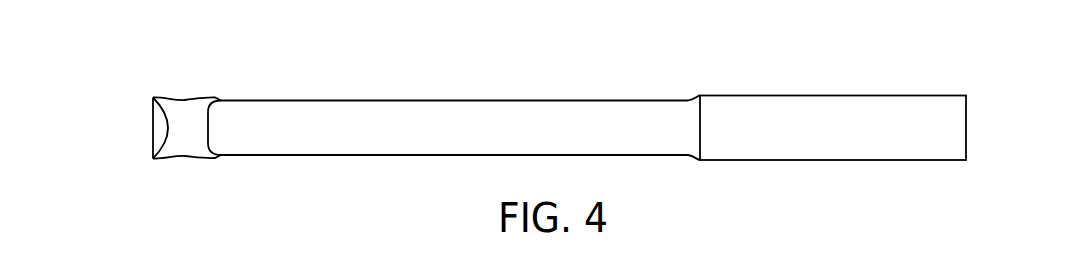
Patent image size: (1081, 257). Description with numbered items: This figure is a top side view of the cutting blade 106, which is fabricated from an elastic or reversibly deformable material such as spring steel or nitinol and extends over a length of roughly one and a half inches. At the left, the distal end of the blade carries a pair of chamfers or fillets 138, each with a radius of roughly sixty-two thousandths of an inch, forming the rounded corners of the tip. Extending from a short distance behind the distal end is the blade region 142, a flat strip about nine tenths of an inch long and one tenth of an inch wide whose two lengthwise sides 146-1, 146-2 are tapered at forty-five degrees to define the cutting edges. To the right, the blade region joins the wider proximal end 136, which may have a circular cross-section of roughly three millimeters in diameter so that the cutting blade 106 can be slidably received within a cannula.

The cutting blade 106 is at (137, 90).
The chamfer or fillet 138 is at (163, 128).
The blade region 142 is at (460, 112).
The first lengthwise side 146-1 is at (360, 100).
The second lengthwise side 146-2 is at (424, 155).
The proximal end 136 is at (977, 93).